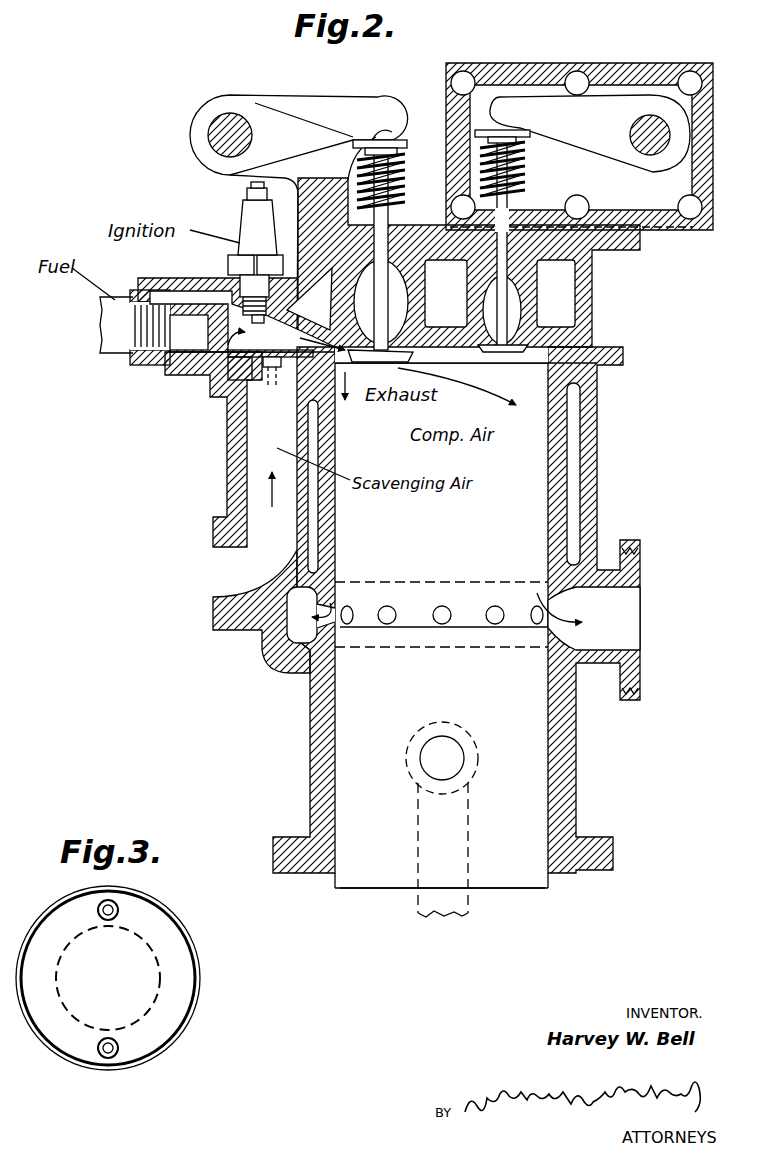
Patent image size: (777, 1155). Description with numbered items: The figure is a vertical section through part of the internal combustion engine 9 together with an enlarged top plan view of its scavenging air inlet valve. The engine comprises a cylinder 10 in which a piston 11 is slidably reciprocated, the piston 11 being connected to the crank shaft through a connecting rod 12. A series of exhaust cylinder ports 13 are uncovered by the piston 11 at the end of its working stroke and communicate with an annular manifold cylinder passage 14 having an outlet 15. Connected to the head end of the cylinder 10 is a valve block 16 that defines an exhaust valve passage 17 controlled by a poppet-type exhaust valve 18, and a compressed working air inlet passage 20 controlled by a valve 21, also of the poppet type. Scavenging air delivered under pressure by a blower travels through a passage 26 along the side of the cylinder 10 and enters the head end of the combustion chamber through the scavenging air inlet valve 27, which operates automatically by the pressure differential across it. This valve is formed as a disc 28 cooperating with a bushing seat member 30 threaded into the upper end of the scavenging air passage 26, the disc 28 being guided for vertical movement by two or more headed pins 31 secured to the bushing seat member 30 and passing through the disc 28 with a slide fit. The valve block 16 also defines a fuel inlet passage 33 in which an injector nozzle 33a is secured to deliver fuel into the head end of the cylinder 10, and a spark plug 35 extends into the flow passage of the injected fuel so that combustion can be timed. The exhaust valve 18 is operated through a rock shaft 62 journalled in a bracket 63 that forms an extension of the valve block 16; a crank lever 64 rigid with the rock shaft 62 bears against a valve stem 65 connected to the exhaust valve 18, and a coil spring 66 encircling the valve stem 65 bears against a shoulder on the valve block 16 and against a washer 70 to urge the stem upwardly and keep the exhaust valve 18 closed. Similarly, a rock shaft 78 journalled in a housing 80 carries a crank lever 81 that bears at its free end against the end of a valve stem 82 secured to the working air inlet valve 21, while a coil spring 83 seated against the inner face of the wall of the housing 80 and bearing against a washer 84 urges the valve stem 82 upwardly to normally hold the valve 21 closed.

In FIG. 2, the internal combustion engine 9 is at (626, 362).
In FIG. 2, the cylinder 10 is at (562, 782).
In FIG. 2, the piston 11 is at (371, 880).
In FIG. 2, the connecting rod 12 is at (460, 910).
In FIG. 2, the exhaust cylinder ports 13 is at (388, 624).
In FIG. 2, the annular manifold cylinder passage 14 is at (297, 637).
In FIG. 2, the outlet 15 is at (628, 637).
In FIG. 2, the valve block 16 is at (594, 284).
In FIG. 2, the exhaust valve passage 17 is at (402, 318).
In FIG. 2, the exhaust valve 18 is at (408, 358).
In FIG. 2, the compressed working air inlet passage 20 is at (520, 318).
In FIG. 3, the compressed working air inlet passage 20 is at (178, 1005).
In FIG. 2, the valve 21 is at (508, 357).
In FIG. 2, the scavenging air passage 26 is at (240, 490).
In FIG. 2, the scavenging air inlet valve 27 is at (299, 343).
In FIG. 3, the scavenging air inlet valve 27 is at (190, 915).
In FIG. 2, the disc 28 is at (291, 366).
In FIG. 2, the bushing seat member 30 is at (249, 372).
In FIG. 3, the bushing seat member 30 is at (70, 1063).
In FIG. 2, the headed pins 31 is at (282, 312).
In FIG. 3, the headed pins 31 is at (97, 910).
In FIG. 2, the fuel inlet passage 33 is at (215, 312).
In FIG. 2, the injector nozzle 33a is at (185, 348).
In FIG. 2, the spark plug 35 is at (236, 226).
In FIG. 2, the rock shaft 62 is at (224, 133).
In FIG. 2, the bracket 63 is at (286, 118).
In FIG. 2, the crank lever 64 is at (310, 108).
In FIG. 2, the valve stem 65 is at (396, 142).
In FIG. 2, the coil spring 66 is at (398, 190).
In FIG. 2, the washer 70 is at (378, 137).
In FIG. 2, the rock shaft 78 is at (630, 130).
In FIG. 2, the housing 80 is at (650, 63).
In FIG. 2, the crank lever 81 is at (596, 152).
In FIG. 2, the valve stem 82 is at (520, 205).
In FIG. 2, the coil spring 83 is at (522, 168).
In FIG. 2, the washer 84 is at (515, 130).